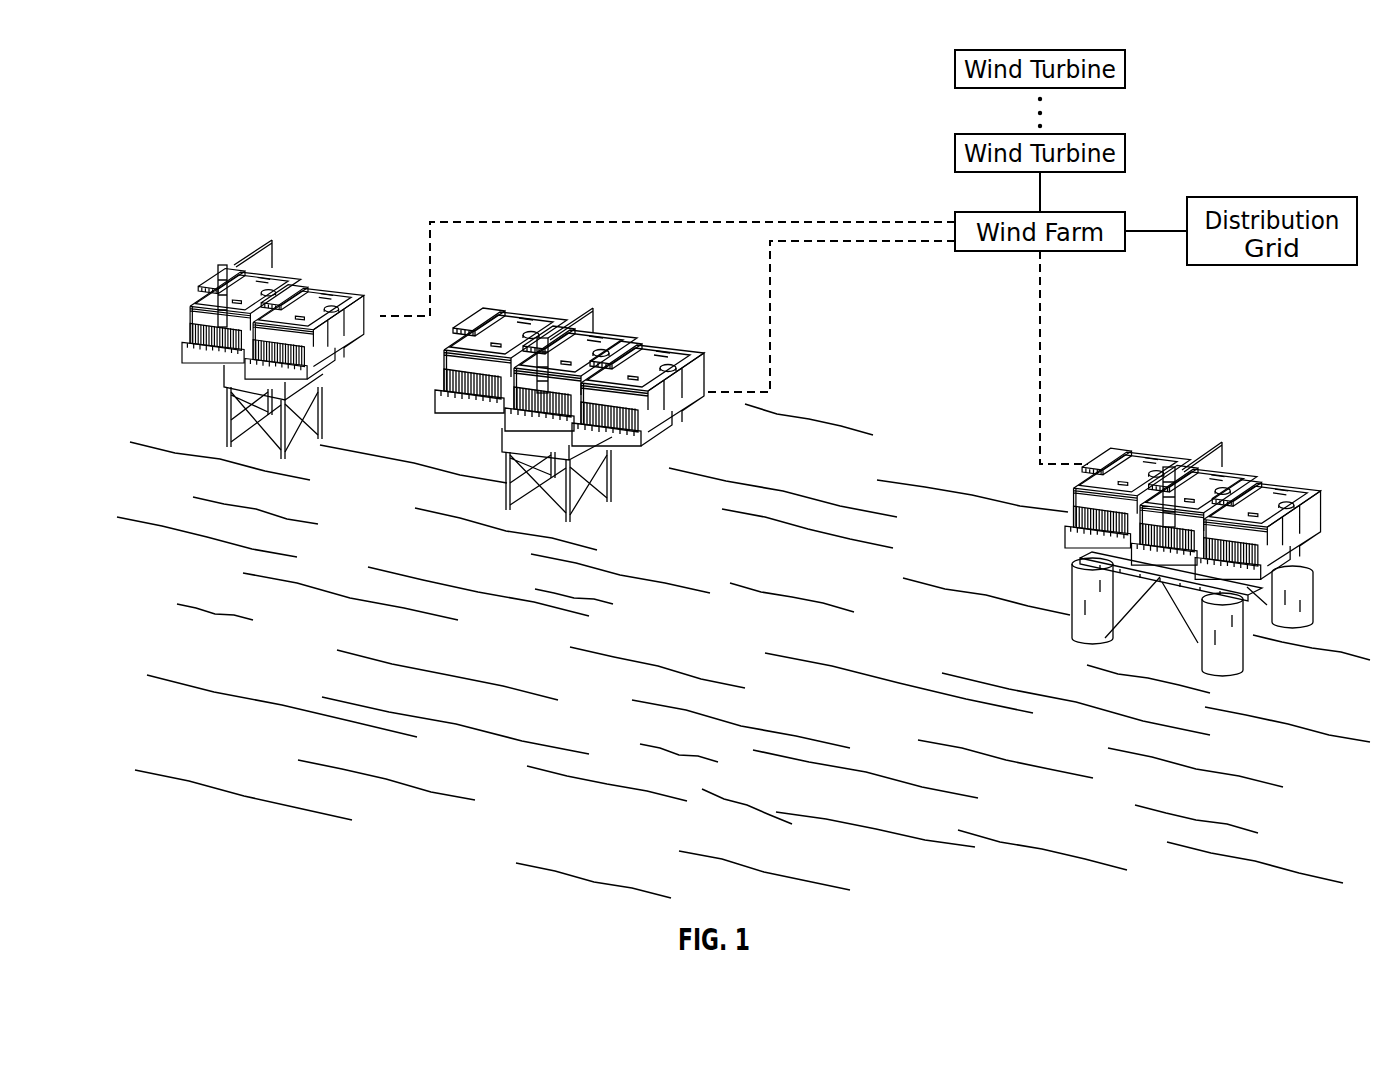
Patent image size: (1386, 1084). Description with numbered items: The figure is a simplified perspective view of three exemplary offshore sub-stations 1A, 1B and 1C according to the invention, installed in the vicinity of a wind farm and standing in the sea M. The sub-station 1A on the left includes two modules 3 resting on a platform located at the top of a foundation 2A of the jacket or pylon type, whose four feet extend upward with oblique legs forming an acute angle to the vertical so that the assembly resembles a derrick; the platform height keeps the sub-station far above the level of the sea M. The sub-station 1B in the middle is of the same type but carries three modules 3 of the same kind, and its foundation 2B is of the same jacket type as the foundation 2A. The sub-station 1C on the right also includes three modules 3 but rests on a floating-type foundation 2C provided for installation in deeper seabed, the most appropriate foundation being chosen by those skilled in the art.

The sub-station 1A is at (341, 196).
The sub-station 1B is at (596, 257).
The sub-station 1C is at (1235, 371).
The foundation 2A is at (343, 411).
The foundation 2B is at (625, 482).
The foundation 2C is at (1054, 578).
The module 3 is at (758, 375).
The sea M is at (754, 615).